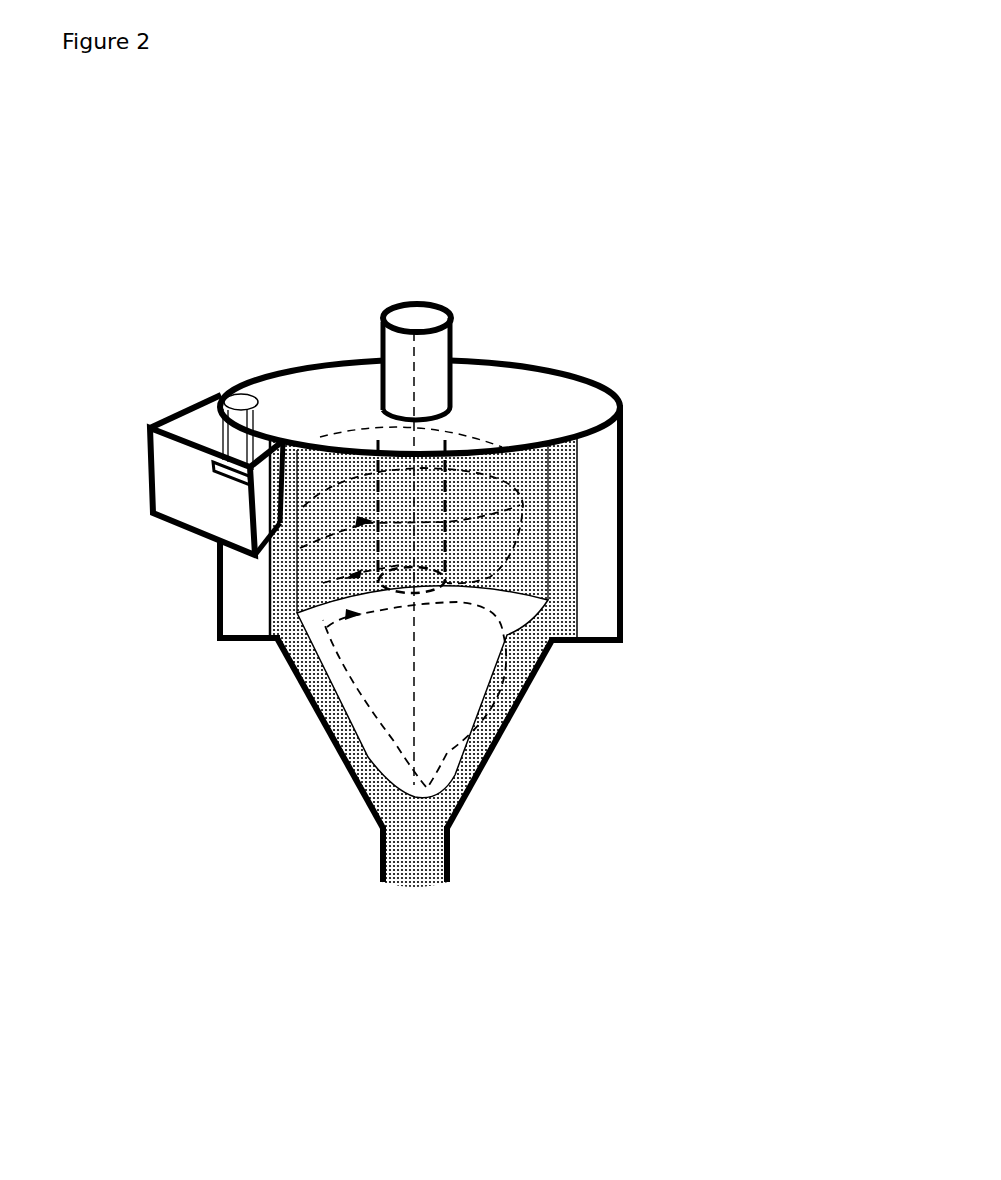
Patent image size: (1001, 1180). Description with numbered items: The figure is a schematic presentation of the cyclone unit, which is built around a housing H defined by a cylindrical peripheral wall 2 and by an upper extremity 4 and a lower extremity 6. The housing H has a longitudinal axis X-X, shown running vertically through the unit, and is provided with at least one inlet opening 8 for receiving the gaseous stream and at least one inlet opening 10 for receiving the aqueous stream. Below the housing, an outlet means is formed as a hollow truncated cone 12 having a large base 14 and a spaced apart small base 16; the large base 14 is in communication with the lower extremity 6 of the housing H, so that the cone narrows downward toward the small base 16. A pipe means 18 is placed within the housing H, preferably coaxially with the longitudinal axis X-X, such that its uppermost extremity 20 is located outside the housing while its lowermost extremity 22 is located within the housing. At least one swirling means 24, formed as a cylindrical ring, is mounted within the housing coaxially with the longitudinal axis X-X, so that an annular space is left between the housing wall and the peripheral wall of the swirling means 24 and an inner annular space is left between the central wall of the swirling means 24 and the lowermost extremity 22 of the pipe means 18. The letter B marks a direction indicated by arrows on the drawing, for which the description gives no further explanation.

The cylindrical peripheral wall 2 is at (622, 585).
The upper extremity 4 is at (302, 373).
The lower extremity 6 is at (237, 638).
The inlet opening 8 is at (183, 470).
The inlet opening 10 is at (245, 410).
The hollow truncated cone 12 is at (312, 765).
The large base 14 is at (557, 645).
The small base 16 is at (455, 820).
The pipe means 18 is at (474, 331).
The uppermost extremity 20 is at (452, 320).
The lowermost extremity 22 is at (447, 500).
The swirling means 24 is at (280, 568).
The longitudinal axis X is at (416, 300).
The direction B is at (40, 333).
The housing H is at (638, 503).